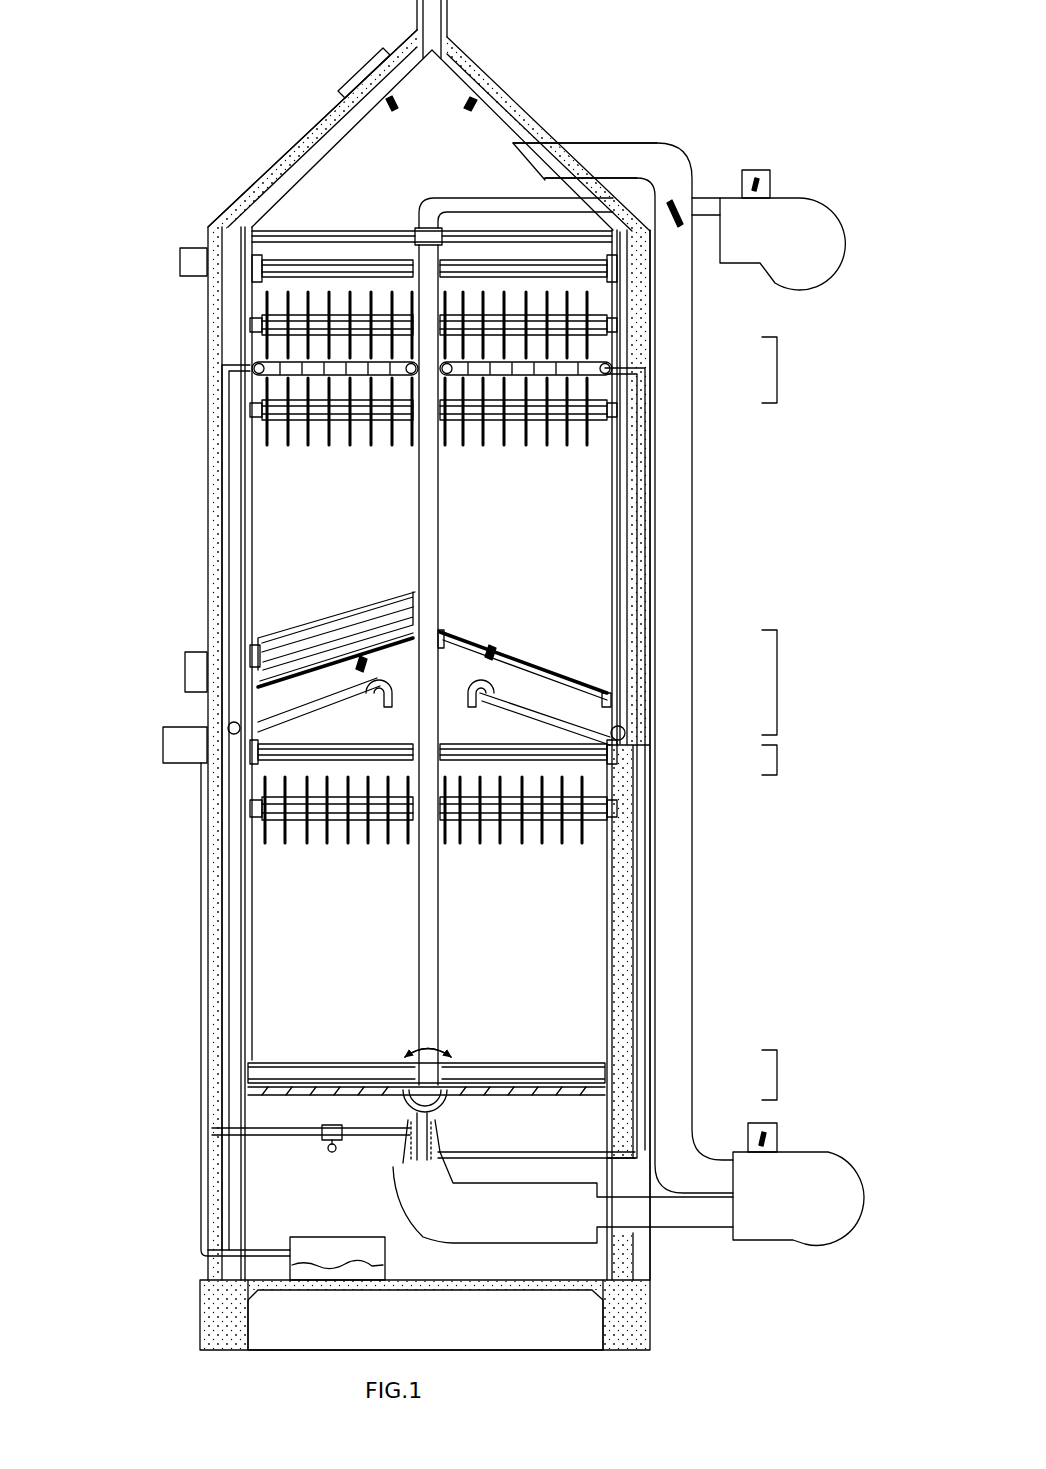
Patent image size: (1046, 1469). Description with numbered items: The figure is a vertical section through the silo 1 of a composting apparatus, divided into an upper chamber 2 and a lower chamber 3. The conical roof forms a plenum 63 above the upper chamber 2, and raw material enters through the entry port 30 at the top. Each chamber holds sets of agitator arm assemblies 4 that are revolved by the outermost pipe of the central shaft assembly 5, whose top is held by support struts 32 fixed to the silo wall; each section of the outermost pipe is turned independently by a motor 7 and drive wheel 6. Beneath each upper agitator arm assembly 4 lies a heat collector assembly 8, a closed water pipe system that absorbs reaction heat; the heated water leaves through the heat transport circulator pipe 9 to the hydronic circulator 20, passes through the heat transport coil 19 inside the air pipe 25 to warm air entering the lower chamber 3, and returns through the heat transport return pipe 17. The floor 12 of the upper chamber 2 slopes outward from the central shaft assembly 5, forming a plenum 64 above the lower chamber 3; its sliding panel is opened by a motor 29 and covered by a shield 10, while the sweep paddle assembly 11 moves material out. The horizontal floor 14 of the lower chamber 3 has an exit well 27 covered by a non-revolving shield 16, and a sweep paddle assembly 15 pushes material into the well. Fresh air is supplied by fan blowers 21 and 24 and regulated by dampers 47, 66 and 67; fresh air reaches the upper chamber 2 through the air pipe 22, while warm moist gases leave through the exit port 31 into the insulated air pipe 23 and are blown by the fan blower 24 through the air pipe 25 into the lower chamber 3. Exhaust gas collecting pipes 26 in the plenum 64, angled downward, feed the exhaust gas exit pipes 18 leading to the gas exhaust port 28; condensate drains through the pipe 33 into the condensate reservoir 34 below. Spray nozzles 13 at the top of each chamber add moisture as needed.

The silo 1 is at (484, 55).
The upper chamber 2 is at (352, 529).
The lower chamber 3 is at (345, 923).
The agitator arm assembly 4 is at (276, 338).
The central shaft assembly 5 is at (429, 543).
The drive wheel 6 is at (311, 263).
The motor 7 is at (200, 262).
The heat collector assembly 8 is at (269, 369).
The heat transport circulator pipe 9 is at (219, 430).
The shield 10 is at (326, 616).
The sweep paddle assembly 11 is at (302, 640).
The floor 12 is at (346, 668).
The spray nozzle 13 is at (486, 103).
The floor 14 is at (271, 1094).
The sweep paddle assembly 15 is at (276, 1073).
The shield 16 is at (441, 1045).
The heat transport return pipe 17 is at (647, 540).
The exhaust gas exit pipe 18 is at (234, 480).
The heat transport coil 19 is at (408, 1166).
The hydronic circulator 20 is at (329, 1152).
The fan blower 21 is at (780, 262).
The air pipe 22 is at (700, 207).
The insulated air pipe 23 is at (662, 793).
The fan blower 24 is at (800, 1218).
The air pipe 25 is at (668, 1210).
The exhaust gas collecting pipe 26 is at (576, 712).
The exit well 27 is at (411, 1117).
The gas exhaust port 28 is at (433, 12).
The motor 29 is at (201, 663).
The entry port 30 is at (379, 47).
The exit port 31 is at (582, 160).
The support strut 32 is at (308, 228).
The pipe 33 is at (221, 1215).
The condensate reservoir 34 is at (347, 1256).
The damper 47 is at (772, 180).
The plenum 63 is at (444, 154).
The plenum 64 is at (400, 736).
The damper 66 is at (676, 230).
The damper 67 is at (779, 1135).